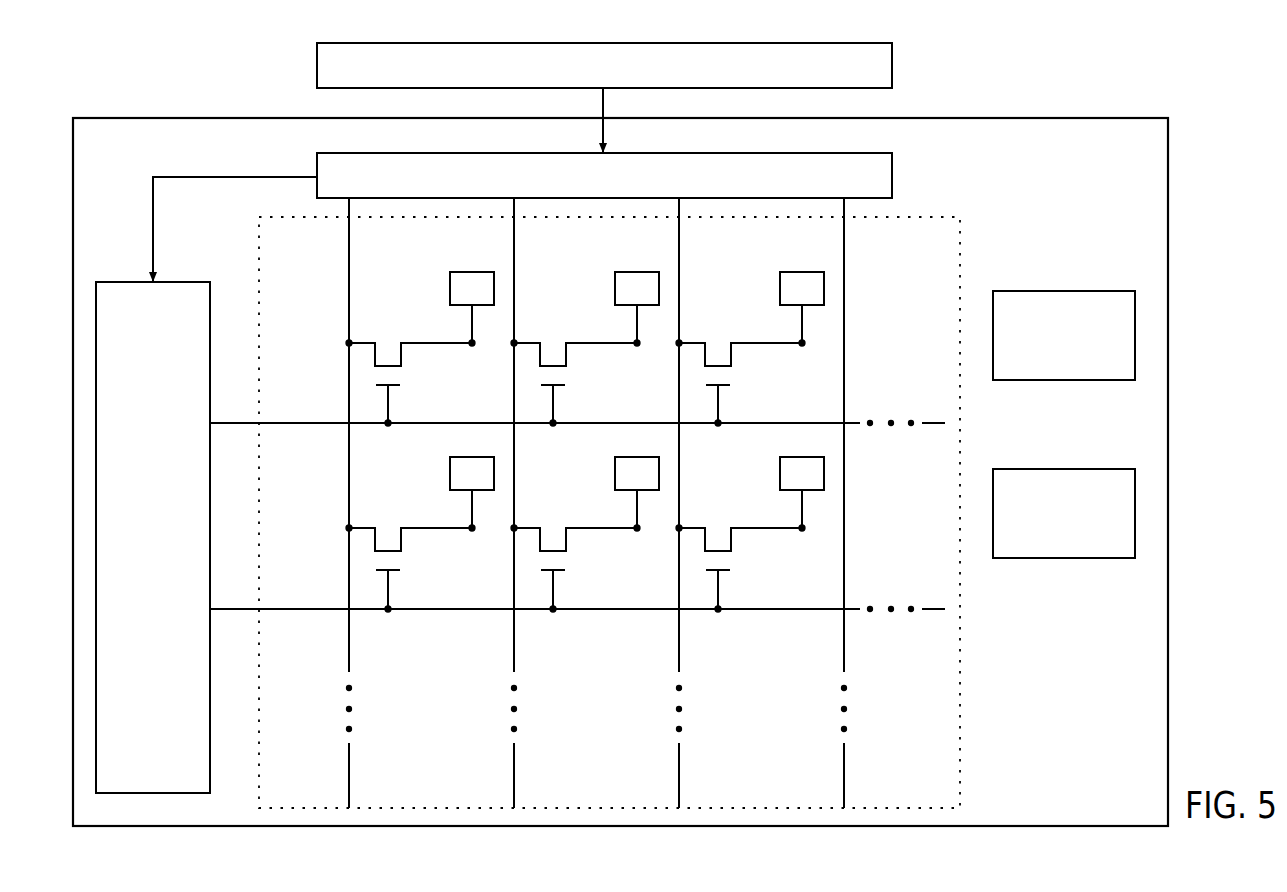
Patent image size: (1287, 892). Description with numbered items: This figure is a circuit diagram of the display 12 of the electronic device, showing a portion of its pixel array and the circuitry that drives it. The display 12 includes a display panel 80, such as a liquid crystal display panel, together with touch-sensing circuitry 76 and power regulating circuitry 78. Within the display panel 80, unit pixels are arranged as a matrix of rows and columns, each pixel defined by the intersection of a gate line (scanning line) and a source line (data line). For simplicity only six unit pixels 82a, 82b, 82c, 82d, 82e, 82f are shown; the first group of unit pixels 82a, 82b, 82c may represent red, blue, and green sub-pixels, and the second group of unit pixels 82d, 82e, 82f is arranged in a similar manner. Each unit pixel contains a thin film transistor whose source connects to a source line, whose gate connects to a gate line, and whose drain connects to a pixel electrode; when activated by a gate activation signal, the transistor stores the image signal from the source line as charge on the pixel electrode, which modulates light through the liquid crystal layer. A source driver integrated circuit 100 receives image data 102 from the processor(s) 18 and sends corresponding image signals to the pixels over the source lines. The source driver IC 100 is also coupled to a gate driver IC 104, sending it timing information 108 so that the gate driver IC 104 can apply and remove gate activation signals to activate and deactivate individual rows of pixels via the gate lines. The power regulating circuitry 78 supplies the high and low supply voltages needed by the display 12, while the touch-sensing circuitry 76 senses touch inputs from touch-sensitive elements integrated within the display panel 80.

The display 12 is at (945, 118).
The processor(s) 18 is at (735, 44).
The touch-sensing circuitry 76 is at (1072, 291).
The power regulating circuitry 78 is at (1072, 469).
The display panel 80 is at (947, 218).
The unit pixel 82a is at (366, 297).
The unit pixel 82b is at (530, 269).
The unit pixel 82c is at (695, 269).
The unit pixel 82d is at (366, 483).
The unit pixel 82e is at (530, 464).
The unit pixel 82f is at (695, 464).
The source driver integrated circuit 100 is at (735, 152).
The image data 102 is at (605, 112).
The gate driver IC 104 is at (190, 282).
The timing information 108 is at (190, 177).